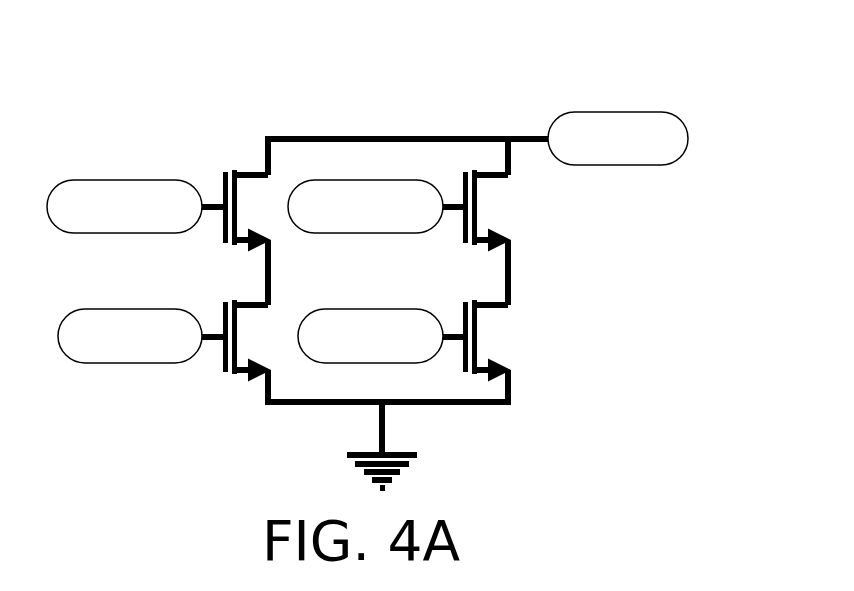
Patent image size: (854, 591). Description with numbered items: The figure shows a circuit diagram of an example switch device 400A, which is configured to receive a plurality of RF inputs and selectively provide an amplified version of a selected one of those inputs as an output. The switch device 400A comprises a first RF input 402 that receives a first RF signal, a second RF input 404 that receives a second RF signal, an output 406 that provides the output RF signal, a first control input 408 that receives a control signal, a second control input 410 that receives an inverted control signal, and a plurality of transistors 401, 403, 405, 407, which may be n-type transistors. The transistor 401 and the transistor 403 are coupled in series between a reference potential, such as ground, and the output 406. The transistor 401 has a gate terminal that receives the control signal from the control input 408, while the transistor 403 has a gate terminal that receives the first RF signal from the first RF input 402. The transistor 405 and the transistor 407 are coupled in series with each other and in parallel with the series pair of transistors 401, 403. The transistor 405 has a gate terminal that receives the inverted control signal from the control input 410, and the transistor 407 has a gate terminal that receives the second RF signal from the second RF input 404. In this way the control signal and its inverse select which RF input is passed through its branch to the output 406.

The switch device 400A is at (391, 251).
The transistor 401 is at (250, 172).
The first RF input 402 is at (130, 336).
The transistor 403 is at (243, 372).
The second RF input 404 is at (370, 336).
The transistor 405 is at (483, 176).
The output 406 is at (618, 138).
The transistor 407 is at (483, 306).
The first control input 408 is at (124, 206).
The second control input 410 is at (365, 206).